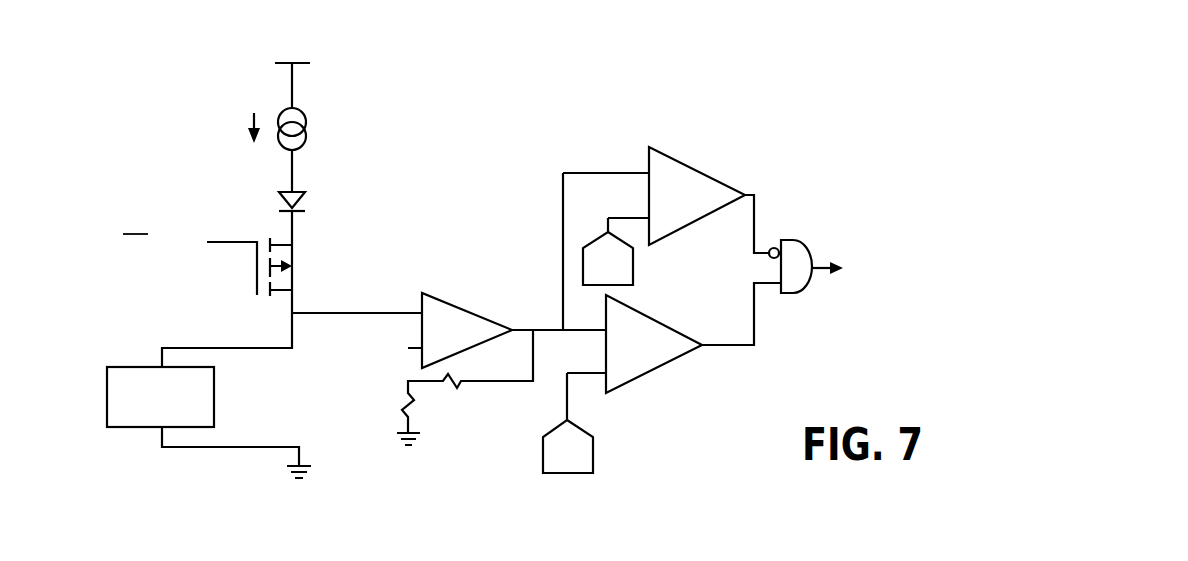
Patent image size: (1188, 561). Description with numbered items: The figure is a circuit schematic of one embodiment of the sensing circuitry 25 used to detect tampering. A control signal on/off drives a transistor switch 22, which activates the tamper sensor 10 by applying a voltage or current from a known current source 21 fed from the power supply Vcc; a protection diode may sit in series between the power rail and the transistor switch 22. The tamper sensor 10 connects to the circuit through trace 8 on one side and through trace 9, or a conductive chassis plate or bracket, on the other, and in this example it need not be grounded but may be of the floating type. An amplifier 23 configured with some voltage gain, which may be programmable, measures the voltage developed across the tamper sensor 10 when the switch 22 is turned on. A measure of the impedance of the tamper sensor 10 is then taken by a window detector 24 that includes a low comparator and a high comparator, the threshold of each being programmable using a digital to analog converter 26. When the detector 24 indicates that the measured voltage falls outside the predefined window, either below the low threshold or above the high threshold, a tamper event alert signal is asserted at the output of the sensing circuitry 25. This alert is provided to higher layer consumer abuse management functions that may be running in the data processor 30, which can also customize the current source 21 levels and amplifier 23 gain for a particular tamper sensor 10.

The trace 8 is at (264, 326).
The trace or conductive chassis plate/bracket 9 is at (163, 481).
The tamper sensor 10 is at (214, 400).
The current source 21 is at (305, 122).
The transistor switch 22 is at (302, 255).
The amplifier 23 is at (501, 353).
The window detector 24 is at (700, 276).
The sensing circuitry 25 is at (437, 96).
The digital to analog converter 26 is at (633, 268).
The data processor 30 is at (1122, 185).